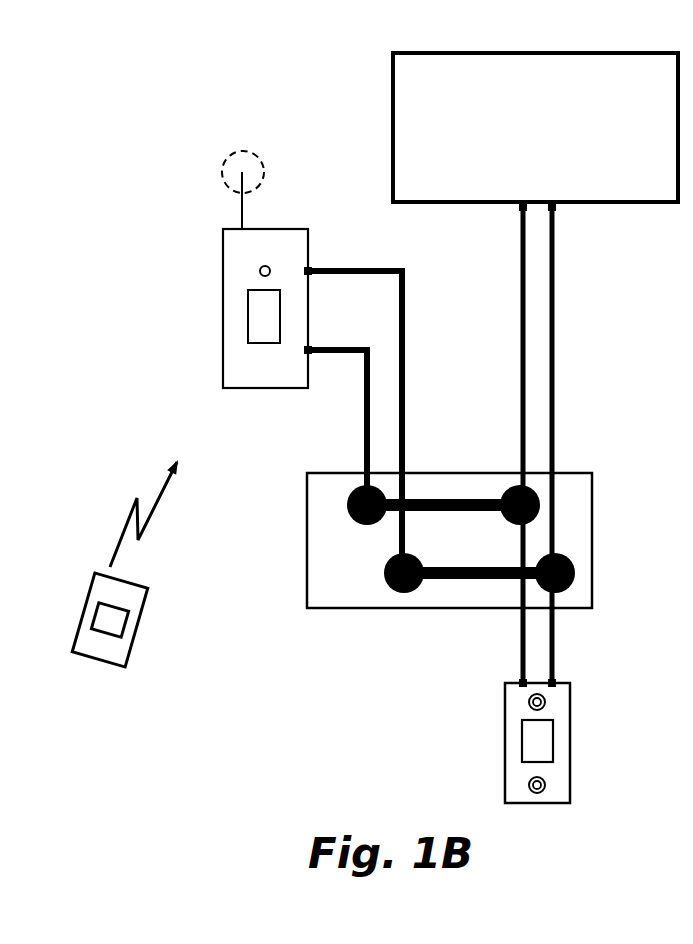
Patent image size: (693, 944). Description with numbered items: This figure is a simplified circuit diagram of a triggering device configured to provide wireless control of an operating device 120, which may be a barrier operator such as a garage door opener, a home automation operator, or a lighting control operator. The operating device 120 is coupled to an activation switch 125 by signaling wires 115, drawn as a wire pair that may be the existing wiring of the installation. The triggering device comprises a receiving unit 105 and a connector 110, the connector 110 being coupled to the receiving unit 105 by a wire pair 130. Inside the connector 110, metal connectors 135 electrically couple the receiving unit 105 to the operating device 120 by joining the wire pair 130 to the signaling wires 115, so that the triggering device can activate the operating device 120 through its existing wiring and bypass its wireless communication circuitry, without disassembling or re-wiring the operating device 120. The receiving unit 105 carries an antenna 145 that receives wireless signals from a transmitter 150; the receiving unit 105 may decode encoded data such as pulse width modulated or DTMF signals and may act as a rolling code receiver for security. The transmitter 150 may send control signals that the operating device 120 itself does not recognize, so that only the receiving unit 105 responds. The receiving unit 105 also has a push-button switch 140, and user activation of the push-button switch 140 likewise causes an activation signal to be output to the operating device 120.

The receiving unit 105 is at (290, 229).
The connector 110 is at (563, 473).
The signaling wires 115 is at (555, 324).
The operating device 120 is at (533, 53).
The activation switch 125 is at (565, 702).
The wire pair 130 is at (405, 391).
The metal connectors 135 is at (467, 582).
The push-button switch 140 is at (260, 323).
The antenna 145 is at (230, 202).
The transmitter 150 is at (135, 638).